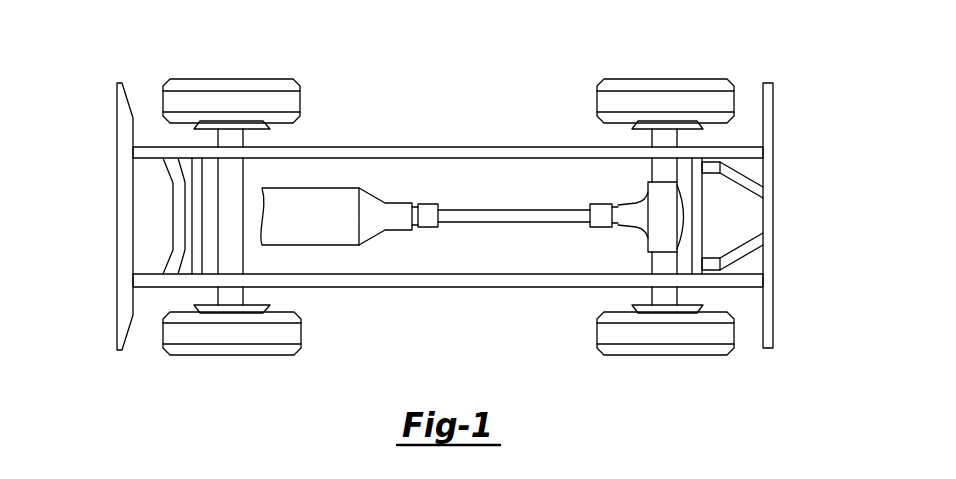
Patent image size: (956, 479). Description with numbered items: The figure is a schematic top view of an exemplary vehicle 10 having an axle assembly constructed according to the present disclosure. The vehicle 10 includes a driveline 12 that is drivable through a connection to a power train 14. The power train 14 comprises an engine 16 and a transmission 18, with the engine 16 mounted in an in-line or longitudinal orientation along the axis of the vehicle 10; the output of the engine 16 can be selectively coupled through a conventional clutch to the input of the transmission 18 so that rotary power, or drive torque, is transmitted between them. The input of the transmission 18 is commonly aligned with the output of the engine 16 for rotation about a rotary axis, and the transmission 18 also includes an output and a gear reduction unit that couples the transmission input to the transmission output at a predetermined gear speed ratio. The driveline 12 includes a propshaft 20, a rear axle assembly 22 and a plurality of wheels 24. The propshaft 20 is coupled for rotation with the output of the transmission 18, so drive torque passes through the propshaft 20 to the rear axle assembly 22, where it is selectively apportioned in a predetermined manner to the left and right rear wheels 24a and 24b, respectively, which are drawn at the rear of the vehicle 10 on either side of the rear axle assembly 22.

The vehicle 10 is at (400, 88).
The driveline 12 is at (530, 173).
The power train 14 is at (354, 248).
The engine 16 is at (320, 227).
The transmission 18 is at (395, 212).
The propshaft 20 is at (512, 209).
The rear axle assembly 22 is at (638, 244).
The wheels 24 is at (492, 190).
The left rear wheel 24a is at (608, 328).
The right rear wheel 24b is at (700, 83).